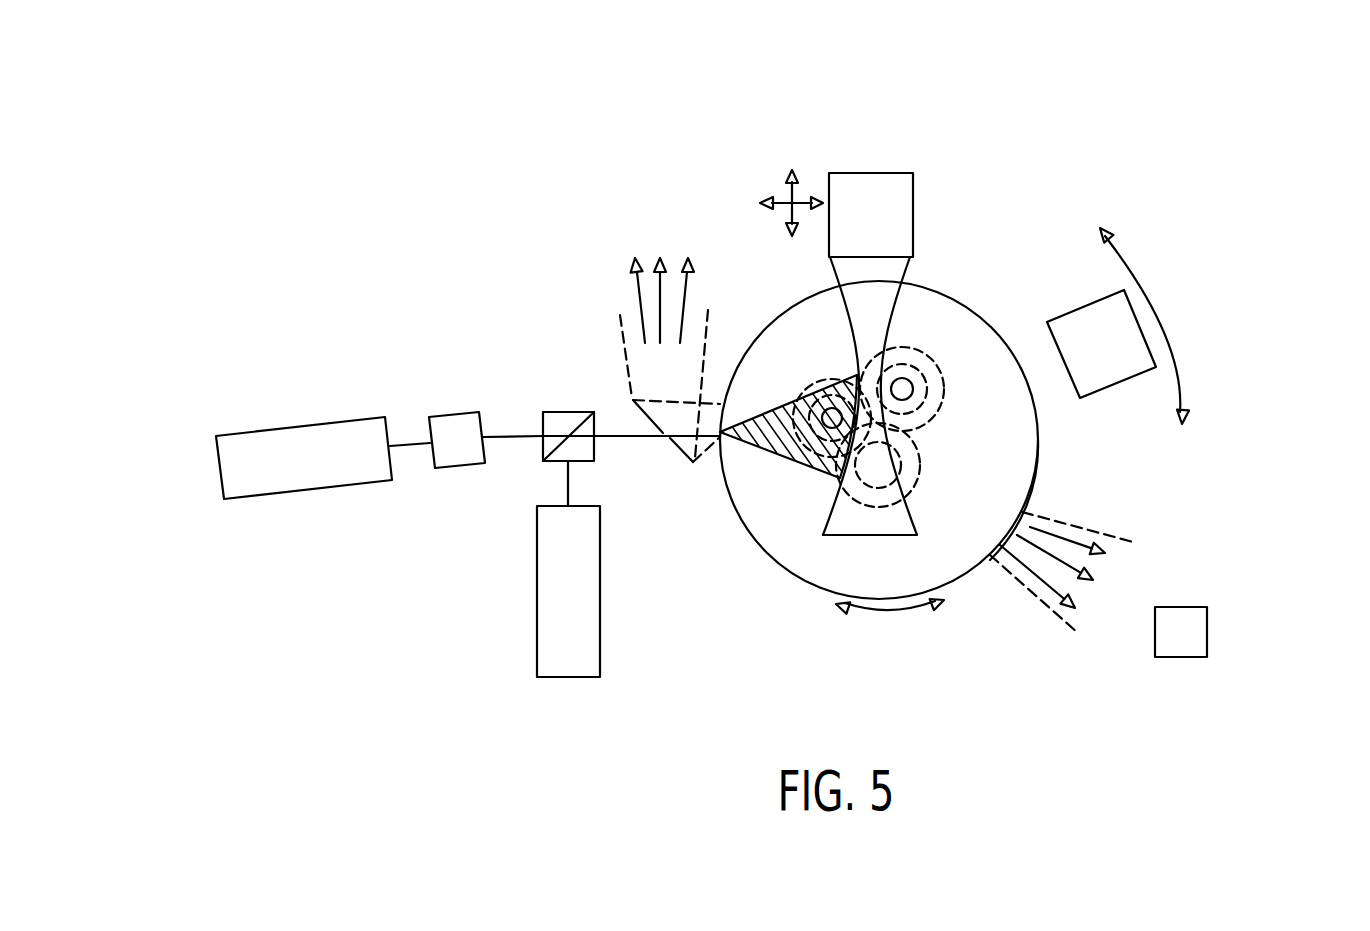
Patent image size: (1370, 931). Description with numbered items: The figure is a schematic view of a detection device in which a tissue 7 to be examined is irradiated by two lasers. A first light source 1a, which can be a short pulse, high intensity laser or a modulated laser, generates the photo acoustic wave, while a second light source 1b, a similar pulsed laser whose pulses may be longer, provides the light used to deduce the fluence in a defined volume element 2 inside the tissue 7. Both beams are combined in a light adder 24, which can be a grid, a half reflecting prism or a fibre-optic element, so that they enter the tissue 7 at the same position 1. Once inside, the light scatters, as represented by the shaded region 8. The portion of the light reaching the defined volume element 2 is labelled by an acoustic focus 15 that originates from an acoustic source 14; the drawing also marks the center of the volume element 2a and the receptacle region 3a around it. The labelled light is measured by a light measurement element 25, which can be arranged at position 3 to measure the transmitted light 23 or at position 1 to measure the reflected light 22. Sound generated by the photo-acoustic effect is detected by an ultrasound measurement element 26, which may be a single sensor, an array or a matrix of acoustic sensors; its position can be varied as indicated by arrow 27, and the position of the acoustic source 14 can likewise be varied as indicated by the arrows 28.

The position 1 is at (670, 438).
The first light source 1a is at (588, 600).
The second light source 1b is at (302, 437).
The defined volume element 2 is at (880, 444).
The sample center 2a is at (830, 413).
The position 3 is at (1002, 537).
The sample receptacle 3a is at (940, 367).
The tissue 7 is at (775, 527).
The shaded region 8 is at (763, 440).
The acoustic source 14 is at (885, 182).
The acoustic focus 15 is at (860, 300).
The reflected light 22 is at (650, 300).
The transmitted light 23 is at (1067, 557).
The light adder 24 is at (553, 412).
The light measurement element 25 is at (1200, 636).
The ultrasound measurement element 26 is at (1087, 310).
The arrow 27 is at (1167, 335).
The arrows 28 is at (787, 192).